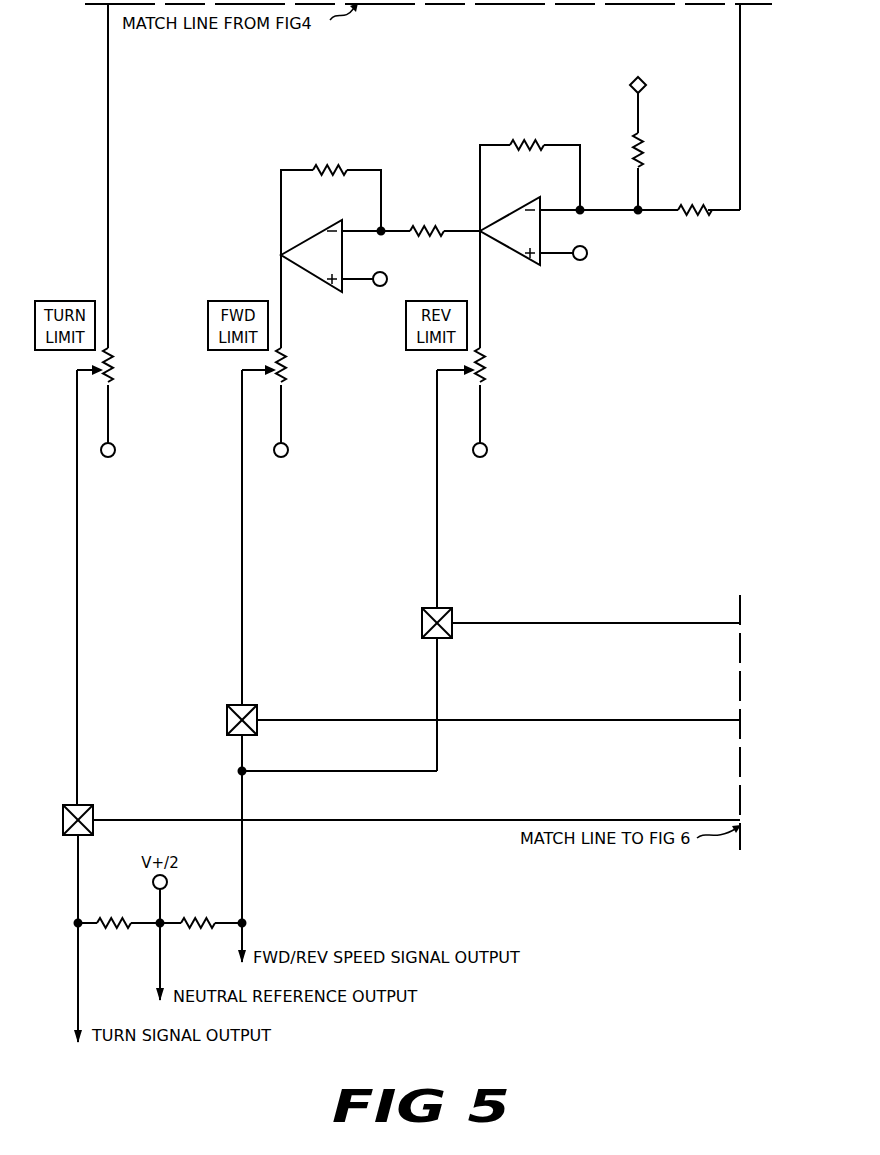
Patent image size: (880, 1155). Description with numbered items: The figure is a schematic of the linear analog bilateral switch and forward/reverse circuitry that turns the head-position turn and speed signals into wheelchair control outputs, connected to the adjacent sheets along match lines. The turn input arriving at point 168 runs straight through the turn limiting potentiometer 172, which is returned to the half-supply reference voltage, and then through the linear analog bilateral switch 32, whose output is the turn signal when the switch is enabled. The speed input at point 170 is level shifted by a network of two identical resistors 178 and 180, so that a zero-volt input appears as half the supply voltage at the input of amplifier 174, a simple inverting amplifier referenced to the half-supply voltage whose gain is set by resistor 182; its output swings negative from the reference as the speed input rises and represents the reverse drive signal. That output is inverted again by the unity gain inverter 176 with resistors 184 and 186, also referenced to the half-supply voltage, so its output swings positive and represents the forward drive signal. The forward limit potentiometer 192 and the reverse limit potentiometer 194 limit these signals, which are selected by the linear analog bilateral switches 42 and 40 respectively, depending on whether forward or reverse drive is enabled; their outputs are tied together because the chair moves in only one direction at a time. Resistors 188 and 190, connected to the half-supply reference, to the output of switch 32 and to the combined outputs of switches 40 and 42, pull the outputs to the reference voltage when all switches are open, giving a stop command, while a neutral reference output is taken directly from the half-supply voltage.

The linear analog bilateral switch 32 is at (63, 806).
The linear analog bilateral switch 40 is at (422, 623).
The linear analog bilateral switch 42 is at (227, 720).
The turn input point 168 is at (108, 127).
The speed signal input point 170 is at (740, 82).
The turn limiting potentiometer 172 is at (114, 371).
The amplifier 174 is at (510, 254).
The unity gain inverter 176 is at (306, 274).
The resistor 178 is at (641, 158).
The resistor 180 is at (679, 208).
The resistor 182 is at (514, 143).
The resistor 184 is at (414, 229).
The resistor 186 is at (316, 168).
The resistor 188 is at (97, 921).
The resistor 190 is at (181, 921).
The forward limit potentiometer 192 is at (287, 371).
The reverse limit potentiometer 194 is at (486, 371).